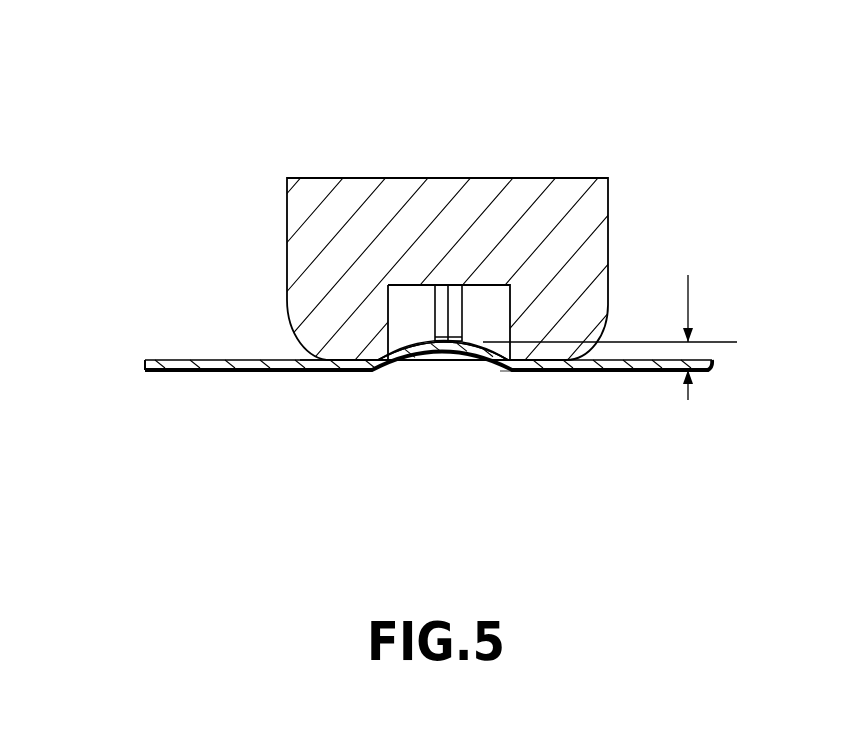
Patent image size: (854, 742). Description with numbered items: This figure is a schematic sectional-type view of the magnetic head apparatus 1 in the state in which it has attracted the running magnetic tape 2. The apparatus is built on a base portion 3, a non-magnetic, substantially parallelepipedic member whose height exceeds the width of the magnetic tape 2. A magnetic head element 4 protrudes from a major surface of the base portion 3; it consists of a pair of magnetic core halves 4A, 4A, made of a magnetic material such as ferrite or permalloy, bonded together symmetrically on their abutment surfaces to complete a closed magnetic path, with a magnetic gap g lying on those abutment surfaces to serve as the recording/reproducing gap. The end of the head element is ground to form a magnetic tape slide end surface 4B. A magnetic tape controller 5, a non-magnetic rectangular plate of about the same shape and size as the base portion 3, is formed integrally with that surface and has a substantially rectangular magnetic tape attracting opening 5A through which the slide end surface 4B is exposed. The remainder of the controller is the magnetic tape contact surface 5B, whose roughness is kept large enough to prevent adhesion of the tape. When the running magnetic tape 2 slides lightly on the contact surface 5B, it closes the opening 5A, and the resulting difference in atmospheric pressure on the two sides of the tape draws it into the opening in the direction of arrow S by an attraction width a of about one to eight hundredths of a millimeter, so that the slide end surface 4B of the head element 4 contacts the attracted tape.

The magnetic head apparatus 1 is at (210, 172).
The magnetic tape 2 is at (146, 370).
The base portion 3 is at (568, 197).
The magnetic head element 4 is at (552, 445).
The magnetic core halves 4A is at (390, 316).
The magnetic tape slide end surface 4B is at (456, 350).
The magnetic tape controller 5 is at (327, 318).
The magnetic tape attracting opening 5A is at (435, 320).
The magnetic tape contact surface 5B is at (335, 370).
The magnetic gap g is at (429, 320).
The arrow S is at (508, 372).
The attraction width a is at (610, 337).